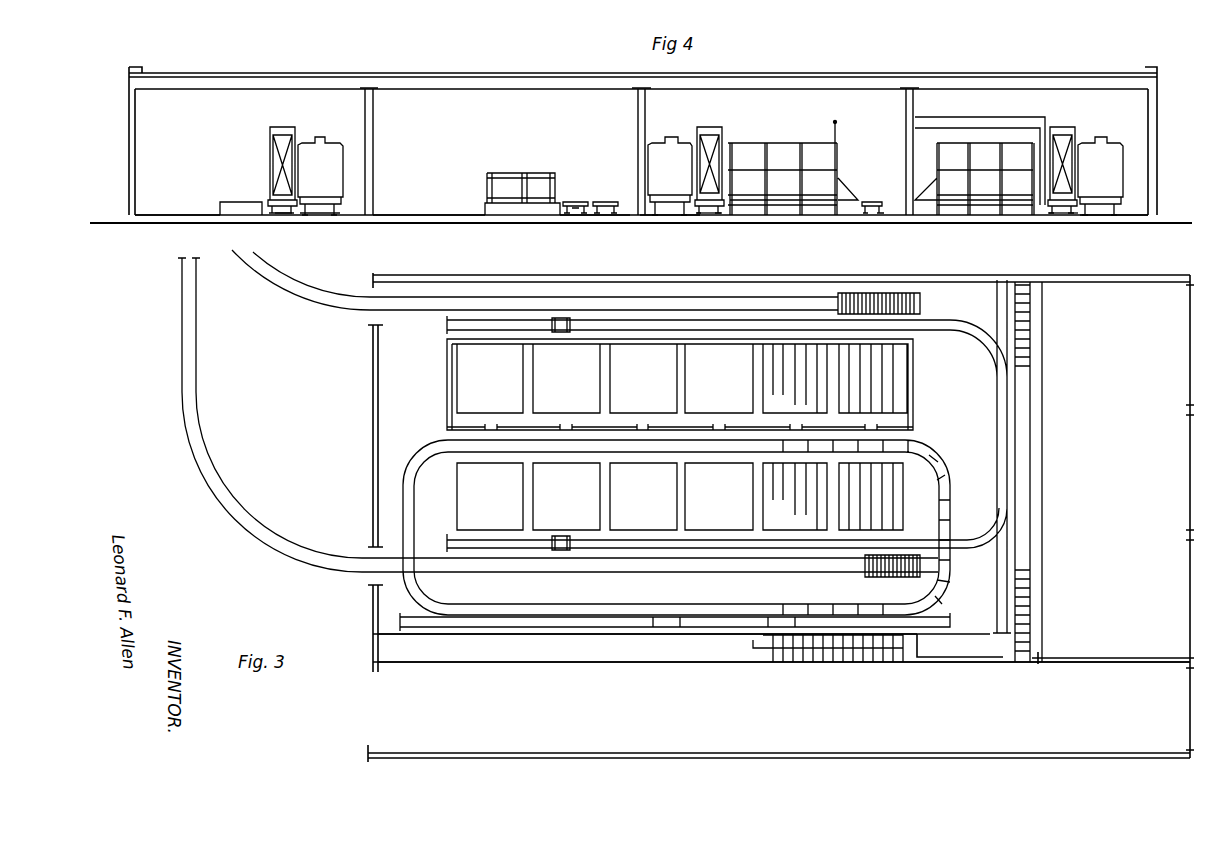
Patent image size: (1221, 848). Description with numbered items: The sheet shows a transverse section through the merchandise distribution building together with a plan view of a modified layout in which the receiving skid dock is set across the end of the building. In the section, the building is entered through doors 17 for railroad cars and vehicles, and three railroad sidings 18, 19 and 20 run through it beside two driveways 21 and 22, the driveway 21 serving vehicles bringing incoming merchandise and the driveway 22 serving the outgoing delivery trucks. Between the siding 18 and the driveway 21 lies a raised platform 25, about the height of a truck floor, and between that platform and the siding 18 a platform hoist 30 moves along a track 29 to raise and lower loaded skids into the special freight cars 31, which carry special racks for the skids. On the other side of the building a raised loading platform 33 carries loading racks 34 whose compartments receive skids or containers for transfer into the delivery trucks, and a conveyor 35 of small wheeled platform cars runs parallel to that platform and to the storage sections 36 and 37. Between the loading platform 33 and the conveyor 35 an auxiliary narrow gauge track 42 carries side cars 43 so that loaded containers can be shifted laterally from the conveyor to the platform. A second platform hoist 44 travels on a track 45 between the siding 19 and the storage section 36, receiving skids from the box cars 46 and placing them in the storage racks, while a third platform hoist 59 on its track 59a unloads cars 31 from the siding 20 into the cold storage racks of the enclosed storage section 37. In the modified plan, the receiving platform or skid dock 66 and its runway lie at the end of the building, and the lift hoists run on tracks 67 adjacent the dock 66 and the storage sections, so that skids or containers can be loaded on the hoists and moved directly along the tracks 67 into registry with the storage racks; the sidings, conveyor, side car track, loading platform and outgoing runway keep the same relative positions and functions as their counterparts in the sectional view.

In FIG. 3, the doors 17 is at (375, 745).
In FIG. 4, the railroad siding 18 is at (335, 214).
In FIG. 4, the railroad siding 19 is at (666, 214).
In FIG. 4, the railroad siding 20 is at (1112, 214).
In FIG. 4, the driveway 21 is at (205, 190).
In FIG. 4, the driveway 22 is at (400, 208).
In FIG. 4, the raised platform 25 is at (230, 208).
In FIG. 4, the track 29 is at (275, 214).
In FIG. 4, the platform hoist 30 is at (270, 150).
In FIG. 4, the special freight cars 31 is at (312, 140).
In FIG. 4, the raised loading platform 33 is at (476, 206).
In FIG. 4, the loading racks 34 is at (535, 185).
In FIG. 4, the conveyor 35 is at (606, 200).
In FIG. 4, the storage section 36 is at (790, 145).
In FIG. 4, the storage section 37 is at (1010, 135).
In FIG. 4, the auxiliary narrow gauge track 42 is at (570, 214).
In FIG. 4, the side cars 43 is at (578, 200).
In FIG. 4, the platform hoist 44 is at (720, 135).
In FIG. 4, the track 45 is at (712, 214).
In FIG. 4, the box cars 46 is at (680, 135).
In FIG. 4, the platform hoist 59 is at (1078, 135).
In FIG. 4, the track 59a is at (1062, 214).
In FIG. 3, the tracks 67 is at (945, 325).
In FIG. 3, the receiving platform or skid dock 66 is at (1035, 527).